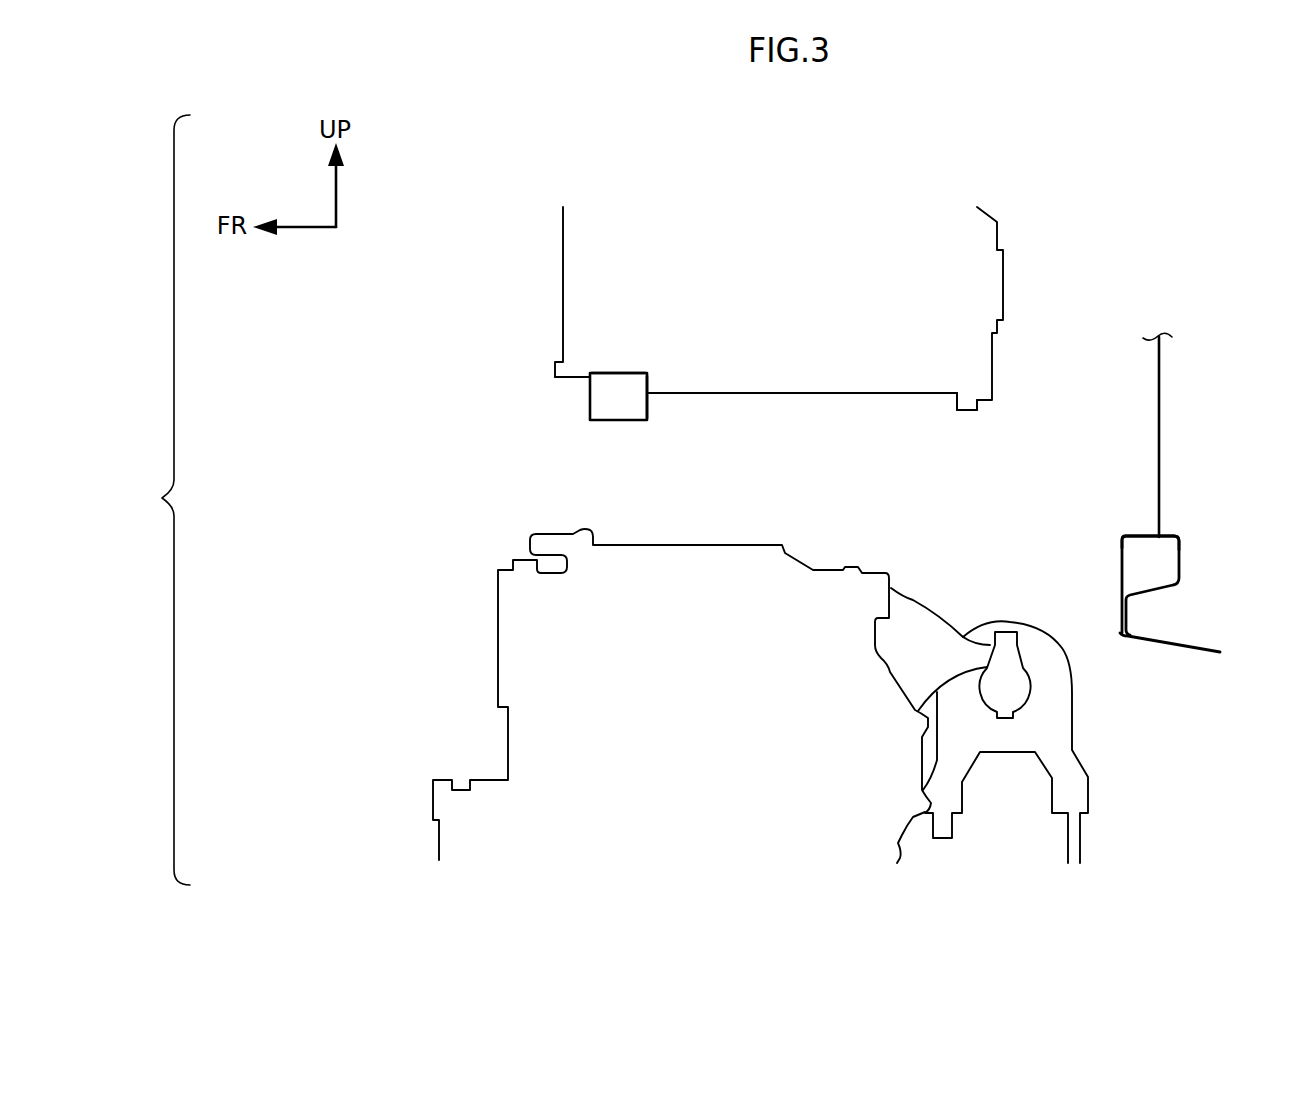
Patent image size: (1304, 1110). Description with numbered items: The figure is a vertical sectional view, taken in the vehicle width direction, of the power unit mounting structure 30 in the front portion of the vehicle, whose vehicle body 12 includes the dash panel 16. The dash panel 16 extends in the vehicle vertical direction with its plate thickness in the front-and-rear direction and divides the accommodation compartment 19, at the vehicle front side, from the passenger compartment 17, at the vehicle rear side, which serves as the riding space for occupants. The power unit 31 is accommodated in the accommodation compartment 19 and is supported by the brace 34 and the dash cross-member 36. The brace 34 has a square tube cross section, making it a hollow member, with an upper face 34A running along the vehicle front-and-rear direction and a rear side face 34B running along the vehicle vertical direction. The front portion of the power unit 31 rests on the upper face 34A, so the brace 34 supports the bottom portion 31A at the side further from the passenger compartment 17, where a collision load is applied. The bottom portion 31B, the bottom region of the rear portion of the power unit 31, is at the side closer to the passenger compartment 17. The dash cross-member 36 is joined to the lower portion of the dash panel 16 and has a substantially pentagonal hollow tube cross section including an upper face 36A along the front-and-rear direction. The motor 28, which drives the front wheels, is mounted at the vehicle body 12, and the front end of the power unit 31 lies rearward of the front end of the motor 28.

The vehicle body 12 is at (1173, 653).
The dash panel 16 is at (1157, 418).
The passenger compartment 17 is at (1232, 417).
The accommodation compartment 19 is at (1052, 360).
The motor 28 is at (884, 566).
The power unit mounting structure 30 is at (510, 277).
The power unit 31 is at (1002, 233).
The bottom portion 31A is at (572, 388).
The bottom portion 31B is at (930, 397).
The brace 34 is at (590, 403).
The upper face 34A is at (617, 372).
The rear side face 34B is at (647, 382).
The dash cross-member 36 is at (1118, 568).
The upper face 36A is at (1135, 535).